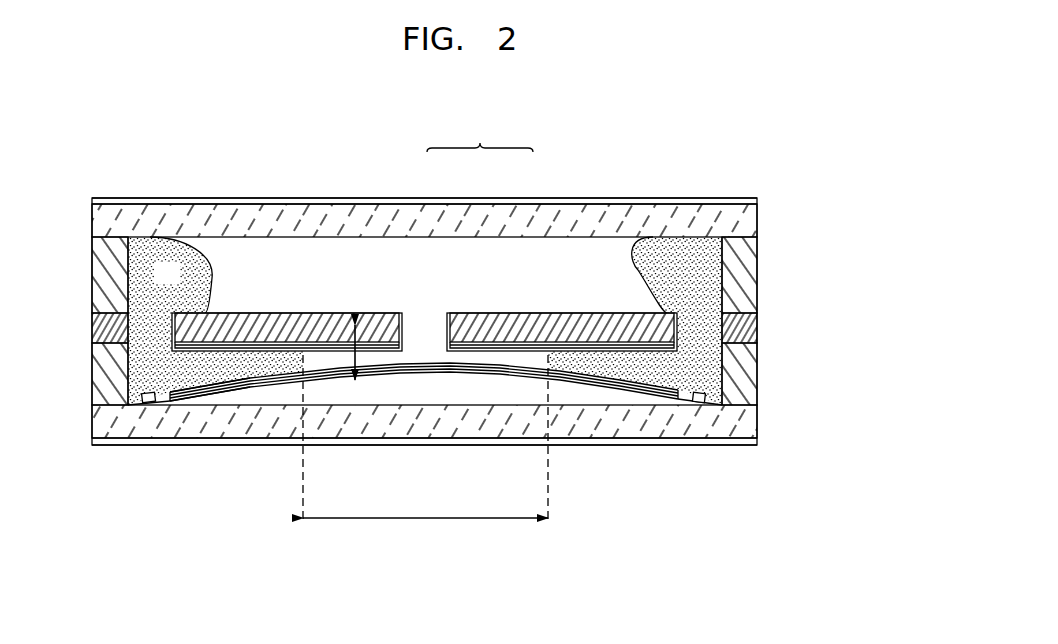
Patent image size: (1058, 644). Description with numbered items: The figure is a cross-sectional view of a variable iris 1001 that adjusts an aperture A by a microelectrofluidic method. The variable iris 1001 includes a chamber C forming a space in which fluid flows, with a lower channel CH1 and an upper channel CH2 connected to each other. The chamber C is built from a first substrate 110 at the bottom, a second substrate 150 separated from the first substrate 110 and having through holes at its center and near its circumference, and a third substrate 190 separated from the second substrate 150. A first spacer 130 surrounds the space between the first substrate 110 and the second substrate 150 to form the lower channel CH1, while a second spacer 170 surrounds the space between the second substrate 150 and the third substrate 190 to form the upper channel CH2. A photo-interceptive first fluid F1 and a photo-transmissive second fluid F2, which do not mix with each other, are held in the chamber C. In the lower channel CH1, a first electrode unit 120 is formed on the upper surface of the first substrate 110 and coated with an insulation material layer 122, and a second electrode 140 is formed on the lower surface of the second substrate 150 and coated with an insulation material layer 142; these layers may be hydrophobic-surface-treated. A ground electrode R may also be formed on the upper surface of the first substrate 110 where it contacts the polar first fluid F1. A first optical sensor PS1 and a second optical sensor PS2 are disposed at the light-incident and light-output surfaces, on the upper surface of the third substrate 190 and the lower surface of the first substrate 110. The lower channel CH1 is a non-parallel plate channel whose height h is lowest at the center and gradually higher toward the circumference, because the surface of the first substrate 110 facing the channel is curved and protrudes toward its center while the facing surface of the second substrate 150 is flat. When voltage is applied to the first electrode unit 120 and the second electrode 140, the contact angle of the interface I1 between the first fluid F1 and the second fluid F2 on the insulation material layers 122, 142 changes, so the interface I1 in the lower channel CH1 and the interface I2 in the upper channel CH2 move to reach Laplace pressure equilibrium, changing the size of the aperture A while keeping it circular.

The variable iris 1001 is at (738, 172).
The first substrate 110 is at (745, 420).
The first electrode unit 120 is at (602, 387).
The insulation material layer 122 is at (628, 387).
The first spacer 130 is at (748, 386).
The second electrode 140 is at (212, 347).
The insulation material layer 142 is at (192, 357).
The second substrate 150 is at (757, 334).
The second spacer 170 is at (748, 283).
The third substrate 190 is at (745, 222).
The first optical sensor PS1 is at (757, 201).
The second optical sensor PS2 is at (757, 441).
The first fluid F1 is at (170, 321).
The second fluid F2 is at (369, 273).
The interface I1 is at (537, 363).
The interface I2 is at (638, 268).
The chamber C is at (480, 134).
The lower channel CH1 is at (492, 357).
The upper channel CH2 is at (522, 263).
The ground electrode R is at (700, 402).
The height h is at (327, 378).
The aperture A is at (425, 438).